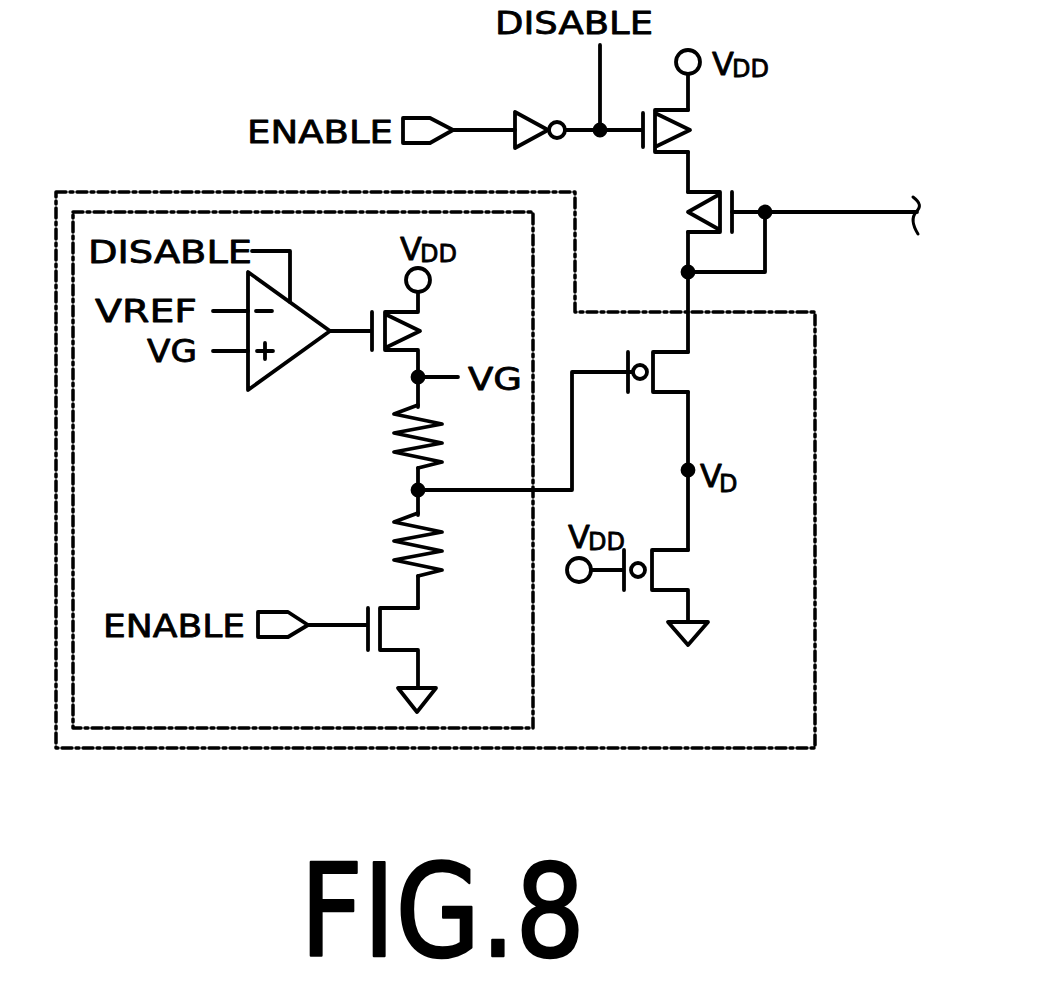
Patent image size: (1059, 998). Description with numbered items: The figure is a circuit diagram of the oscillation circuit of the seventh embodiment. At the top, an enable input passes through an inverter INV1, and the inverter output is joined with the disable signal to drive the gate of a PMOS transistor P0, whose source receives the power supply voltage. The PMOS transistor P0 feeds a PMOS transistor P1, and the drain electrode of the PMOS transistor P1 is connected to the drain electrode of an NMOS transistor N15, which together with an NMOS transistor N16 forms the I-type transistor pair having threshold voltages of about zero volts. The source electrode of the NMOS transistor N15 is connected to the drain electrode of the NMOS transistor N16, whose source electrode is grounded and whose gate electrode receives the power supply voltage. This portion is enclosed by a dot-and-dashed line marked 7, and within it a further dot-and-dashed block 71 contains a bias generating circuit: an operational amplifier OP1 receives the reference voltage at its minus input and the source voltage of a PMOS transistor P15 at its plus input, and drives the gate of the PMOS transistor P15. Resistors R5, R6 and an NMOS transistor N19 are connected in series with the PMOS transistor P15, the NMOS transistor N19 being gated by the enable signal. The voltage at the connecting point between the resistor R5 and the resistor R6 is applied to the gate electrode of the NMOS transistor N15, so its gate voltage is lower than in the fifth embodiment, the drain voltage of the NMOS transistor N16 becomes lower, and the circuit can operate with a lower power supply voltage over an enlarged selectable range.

The inverter INV1 is at (528, 112).
The P-channel transistor P0 is at (700, 132).
The PMOS transistor P1 is at (680, 212).
The PMOS transistor P15 is at (426, 333).
The operational amplifier OP1 is at (258, 370).
The resistor R5 is at (383, 431).
The resistor R6 is at (378, 549).
The NMOS transistor N19 is at (395, 632).
The NMOS transistor N15 is at (675, 374).
The NMOS transistor N16 is at (670, 572).
The output circuit 7 is at (815, 490).
The bias voltage generating circuit 71 is at (533, 700).